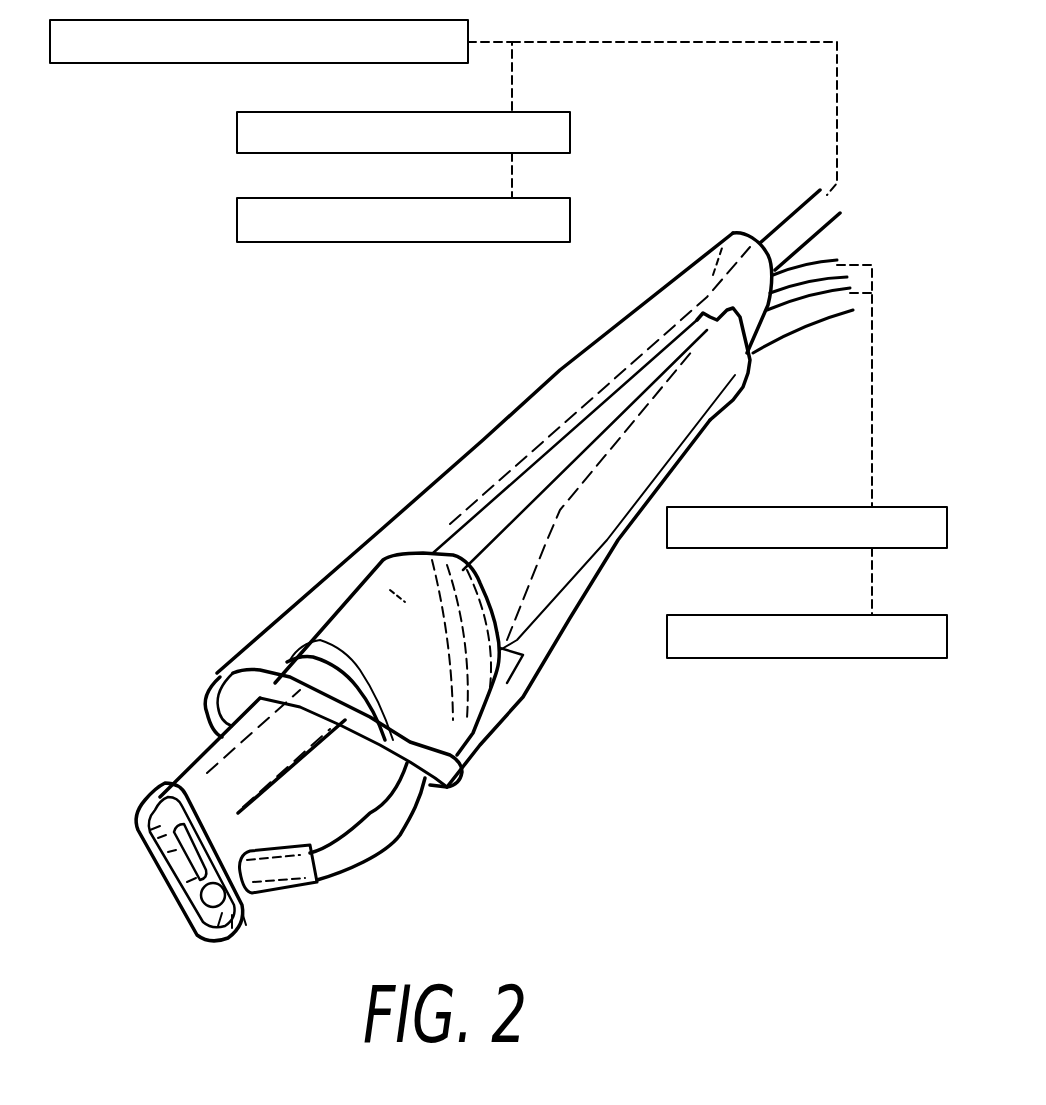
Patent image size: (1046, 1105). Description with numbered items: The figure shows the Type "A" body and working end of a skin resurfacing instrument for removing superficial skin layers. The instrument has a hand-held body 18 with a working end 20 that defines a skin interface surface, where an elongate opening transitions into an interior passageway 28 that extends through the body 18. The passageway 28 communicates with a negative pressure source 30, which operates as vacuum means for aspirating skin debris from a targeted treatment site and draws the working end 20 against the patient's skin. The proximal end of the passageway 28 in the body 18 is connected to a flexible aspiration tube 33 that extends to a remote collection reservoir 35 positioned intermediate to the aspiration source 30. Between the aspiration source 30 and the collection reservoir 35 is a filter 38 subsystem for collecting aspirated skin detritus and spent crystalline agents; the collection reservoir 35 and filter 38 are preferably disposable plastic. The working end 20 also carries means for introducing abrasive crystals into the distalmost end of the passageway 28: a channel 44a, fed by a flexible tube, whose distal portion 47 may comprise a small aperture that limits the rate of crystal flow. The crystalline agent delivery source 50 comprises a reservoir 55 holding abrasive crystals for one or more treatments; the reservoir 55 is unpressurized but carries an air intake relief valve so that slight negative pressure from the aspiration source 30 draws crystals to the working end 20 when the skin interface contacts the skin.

The hand-held body 18 is at (383, 528).
The working end 20 is at (163, 803).
The interior passageway 28 is at (207, 773).
The negative pressure source 30 is at (443, 107).
The flexible aspiration tube 33 is at (783, 220).
The collection reservoir 35 is at (403, 220).
The filter 38 is at (403, 155).
The channel 44a is at (363, 850).
The distal portion 47 is at (263, 880).
The crystalline agent delivery source 50 is at (807, 406).
The reservoir 55 is at (807, 603).